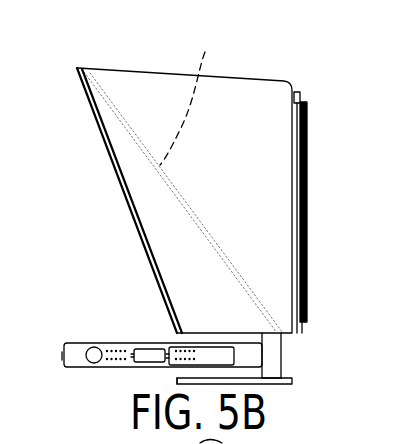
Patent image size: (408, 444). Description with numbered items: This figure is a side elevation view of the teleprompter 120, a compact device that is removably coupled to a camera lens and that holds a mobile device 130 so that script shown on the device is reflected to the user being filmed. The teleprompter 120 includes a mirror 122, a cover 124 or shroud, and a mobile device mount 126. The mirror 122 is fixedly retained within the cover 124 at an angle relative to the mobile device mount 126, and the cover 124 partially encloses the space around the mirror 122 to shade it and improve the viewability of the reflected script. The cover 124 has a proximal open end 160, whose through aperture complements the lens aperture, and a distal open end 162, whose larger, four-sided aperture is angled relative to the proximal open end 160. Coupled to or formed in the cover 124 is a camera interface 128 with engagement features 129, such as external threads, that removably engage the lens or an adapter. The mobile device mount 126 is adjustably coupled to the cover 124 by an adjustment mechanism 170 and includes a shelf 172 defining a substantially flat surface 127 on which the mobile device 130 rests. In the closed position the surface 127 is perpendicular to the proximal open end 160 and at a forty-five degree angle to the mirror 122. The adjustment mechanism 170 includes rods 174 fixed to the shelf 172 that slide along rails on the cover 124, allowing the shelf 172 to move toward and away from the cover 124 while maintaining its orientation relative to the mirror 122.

The teleprompter 120 is at (150, 67).
The mirror 122 is at (205, 52).
The cover 124 is at (244, 101).
The mobile device mount 126 is at (308, 367).
The surface 127 is at (177, 378).
The camera interface 128 is at (303, 96).
The engagement features 129 is at (307, 189).
The mobile device 130 is at (80, 333).
The proximal open end 160 is at (300, 136).
The distal open end 162 is at (110, 190).
The adjustment mechanism 170 is at (290, 350).
The shelf 172 is at (272, 383).
The rods 174 is at (270, 352).